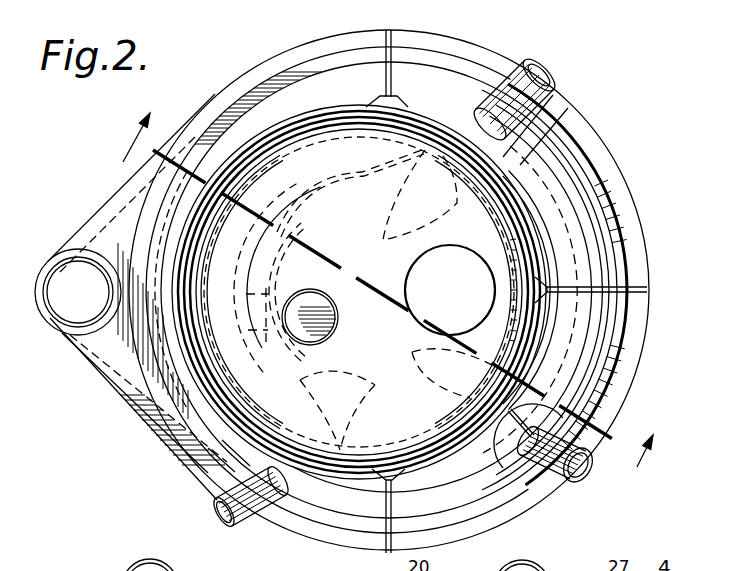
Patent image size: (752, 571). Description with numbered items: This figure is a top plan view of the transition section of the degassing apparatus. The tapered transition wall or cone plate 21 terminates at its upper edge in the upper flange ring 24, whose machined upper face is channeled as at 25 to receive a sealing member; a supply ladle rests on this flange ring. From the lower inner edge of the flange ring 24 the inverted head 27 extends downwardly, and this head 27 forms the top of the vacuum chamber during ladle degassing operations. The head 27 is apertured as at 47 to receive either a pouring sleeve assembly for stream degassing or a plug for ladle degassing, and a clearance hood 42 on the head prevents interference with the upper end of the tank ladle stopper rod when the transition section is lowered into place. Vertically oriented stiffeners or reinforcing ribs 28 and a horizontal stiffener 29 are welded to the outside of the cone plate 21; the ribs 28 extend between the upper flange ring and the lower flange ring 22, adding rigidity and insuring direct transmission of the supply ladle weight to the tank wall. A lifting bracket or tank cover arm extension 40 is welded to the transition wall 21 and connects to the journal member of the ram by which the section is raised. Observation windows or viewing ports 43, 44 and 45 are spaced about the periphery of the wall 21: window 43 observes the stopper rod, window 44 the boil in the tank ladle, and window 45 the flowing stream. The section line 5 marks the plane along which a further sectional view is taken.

The section line 5- 5 is at (383, 304).
The cone plate 21 is at (300, 95).
The lower flange ring 22 is at (633, 387).
The upper flange ring 24 is at (513, 222).
The channel 25 is at (514, 237).
The inverted head 27 is at (282, 150).
The vertically oriented stiffeners 28 is at (394, 55).
The horizontal stiffener 29 is at (614, 225).
The tank cover arm extension 40 is at (125, 345).
The clearance hood 42 is at (332, 329).
The observation window 43 is at (525, 65).
The observation window 44 is at (547, 485).
The observation window 45 is at (244, 520).
The aperture 47 is at (414, 268).